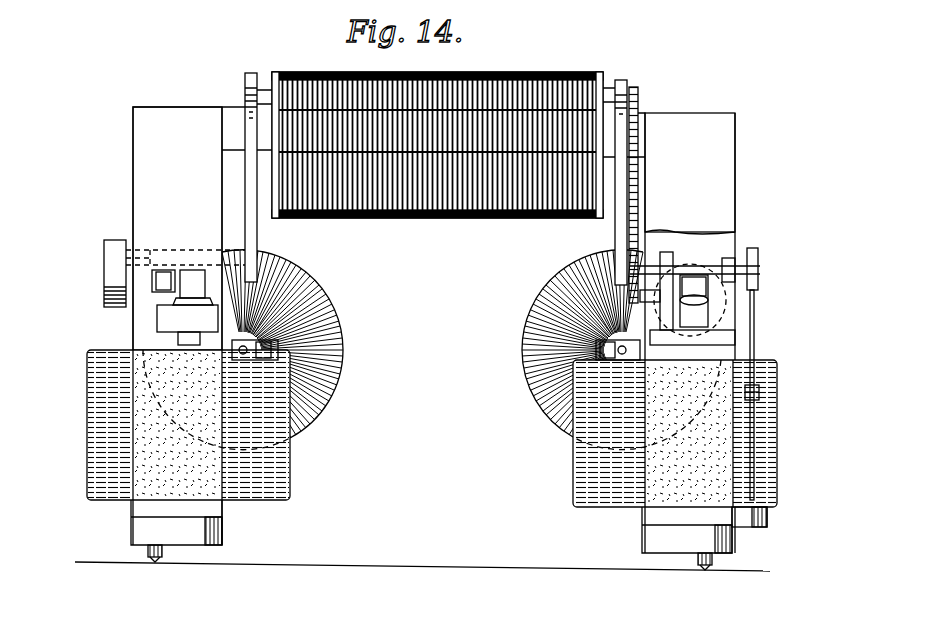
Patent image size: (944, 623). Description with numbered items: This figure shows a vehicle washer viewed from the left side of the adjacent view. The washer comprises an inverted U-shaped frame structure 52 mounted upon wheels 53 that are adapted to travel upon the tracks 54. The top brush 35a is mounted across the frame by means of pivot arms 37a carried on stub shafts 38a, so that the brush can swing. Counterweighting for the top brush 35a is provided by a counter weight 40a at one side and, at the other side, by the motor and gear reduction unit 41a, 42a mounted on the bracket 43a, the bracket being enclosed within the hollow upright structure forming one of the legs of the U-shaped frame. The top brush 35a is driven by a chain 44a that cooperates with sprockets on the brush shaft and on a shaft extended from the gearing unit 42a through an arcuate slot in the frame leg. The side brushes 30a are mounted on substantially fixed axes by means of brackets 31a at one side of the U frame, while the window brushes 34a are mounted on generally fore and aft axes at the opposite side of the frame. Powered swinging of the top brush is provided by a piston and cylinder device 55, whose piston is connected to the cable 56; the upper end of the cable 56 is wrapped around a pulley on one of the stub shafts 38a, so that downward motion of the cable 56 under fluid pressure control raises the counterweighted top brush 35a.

The side brushes 30a is at (290, 462).
The brackets 31a is at (172, 315).
The window brushes 34a is at (348, 378).
The top brush 35a is at (490, 74).
The pivot arms 37a is at (258, 228).
The stub shafts 38a is at (265, 258).
The counter weight 40a is at (106, 258).
The motor 41a is at (710, 300).
The gear reduction unit 42a is at (732, 250).
The bracket 43a is at (668, 255).
The chain 44a is at (640, 110).
The inverted U-shaped frame structure 52 is at (735, 168).
The wheels 53 is at (152, 550).
The tracks 54 is at (157, 560).
The piston and cylinder device 55 is at (768, 520).
The cable 56 is at (756, 330).